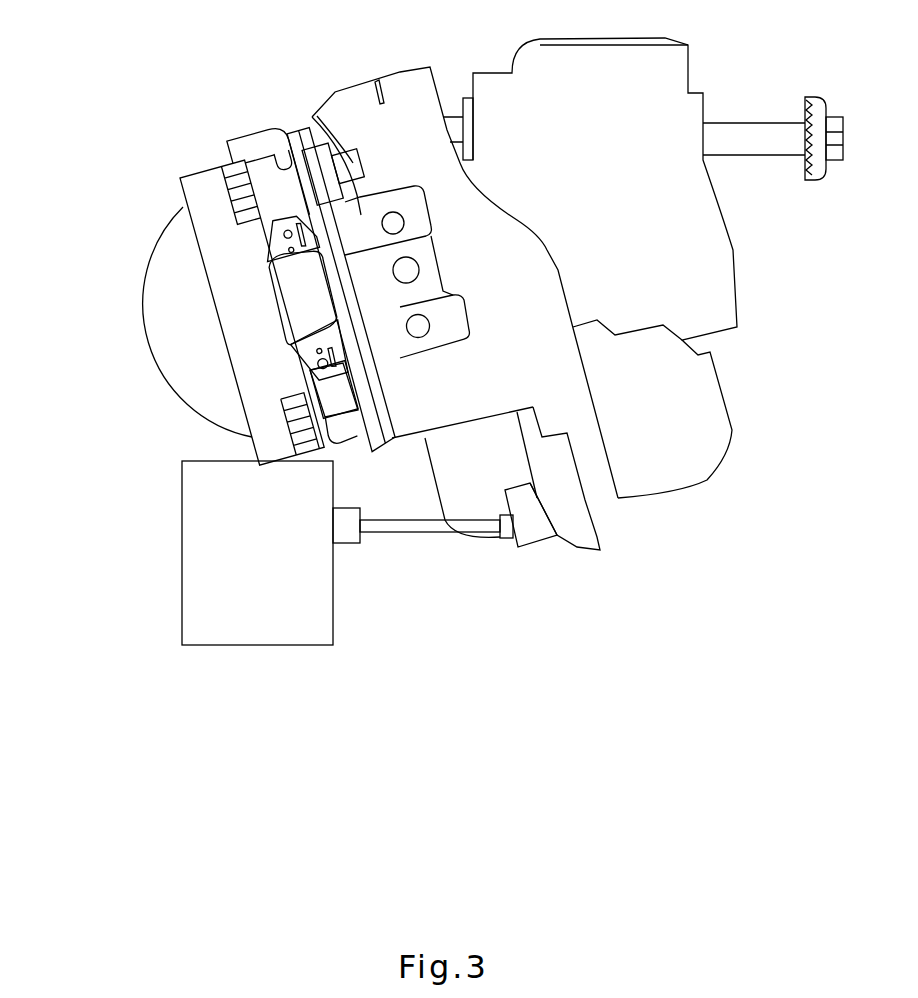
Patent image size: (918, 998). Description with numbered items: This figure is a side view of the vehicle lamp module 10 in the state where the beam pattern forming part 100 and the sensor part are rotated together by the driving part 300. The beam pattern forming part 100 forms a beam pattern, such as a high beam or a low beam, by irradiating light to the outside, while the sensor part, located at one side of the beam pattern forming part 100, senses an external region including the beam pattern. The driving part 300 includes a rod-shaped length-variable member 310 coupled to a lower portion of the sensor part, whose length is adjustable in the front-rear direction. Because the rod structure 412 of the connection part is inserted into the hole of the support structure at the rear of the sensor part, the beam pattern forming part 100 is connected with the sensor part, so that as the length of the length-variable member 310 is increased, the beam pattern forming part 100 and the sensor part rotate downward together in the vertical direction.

The vehicle lamp module 10 is at (62, 31).
The beam pattern forming part 100 is at (110, 340).
The driving part 300 is at (162, 578).
The length-variable member 310 is at (415, 527).
The rod structure 412 is at (397, 213).